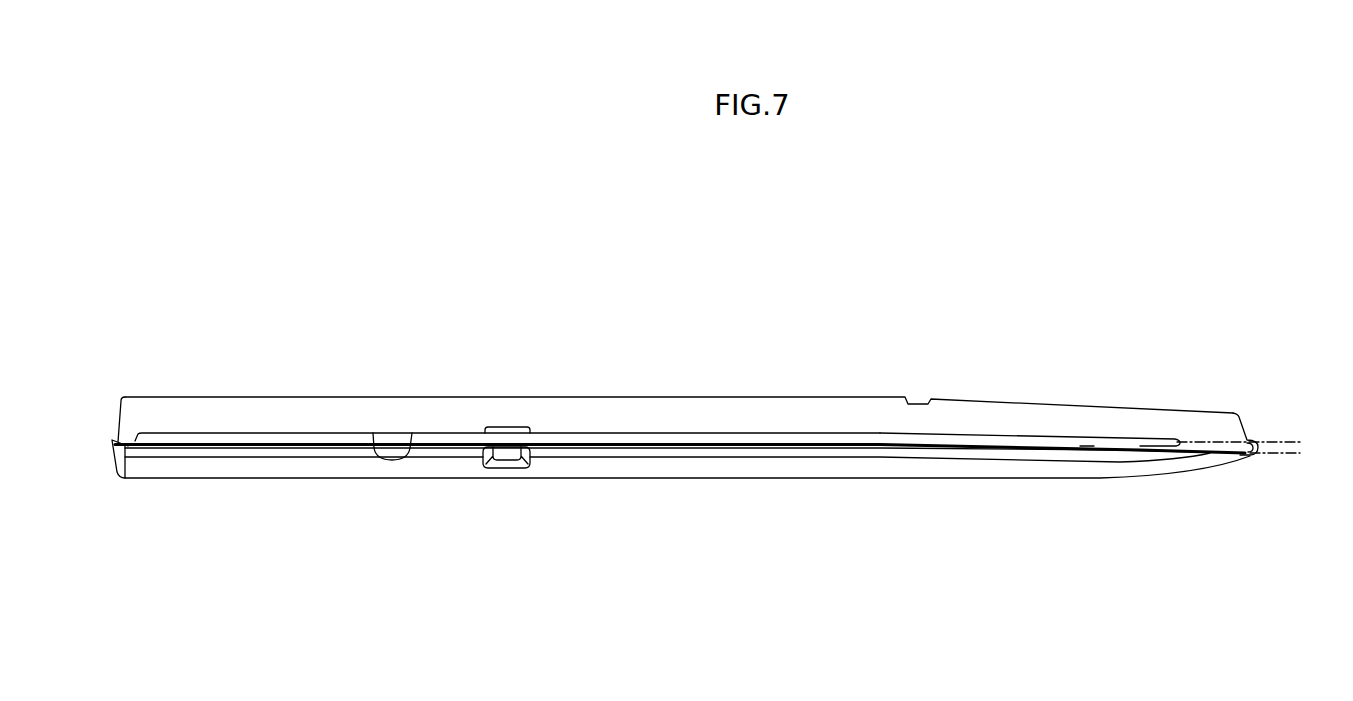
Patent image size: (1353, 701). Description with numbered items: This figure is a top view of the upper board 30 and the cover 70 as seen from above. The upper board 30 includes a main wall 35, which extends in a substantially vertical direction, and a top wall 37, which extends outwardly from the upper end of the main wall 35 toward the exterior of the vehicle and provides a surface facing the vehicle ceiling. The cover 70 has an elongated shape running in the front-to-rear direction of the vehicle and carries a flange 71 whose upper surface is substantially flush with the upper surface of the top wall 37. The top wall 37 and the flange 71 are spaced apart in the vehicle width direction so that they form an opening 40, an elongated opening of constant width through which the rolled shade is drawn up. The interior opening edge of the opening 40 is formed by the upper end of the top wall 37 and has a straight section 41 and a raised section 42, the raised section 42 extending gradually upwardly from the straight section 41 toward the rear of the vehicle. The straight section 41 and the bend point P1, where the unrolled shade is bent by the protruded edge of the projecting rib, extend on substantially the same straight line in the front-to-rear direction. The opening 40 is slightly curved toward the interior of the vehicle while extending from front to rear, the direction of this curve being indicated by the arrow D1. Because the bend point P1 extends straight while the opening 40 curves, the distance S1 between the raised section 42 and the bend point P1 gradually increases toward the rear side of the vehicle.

The upper board 30 is at (128, 498).
The main wall 35 is at (673, 463).
The top wall 37 is at (603, 452).
The opening 40 is at (412, 443).
The straight section 41 is at (293, 440).
The raised section 42 is at (1055, 445).
The cover 70 is at (157, 383).
The flange 71 is at (235, 413).
The bend point P1 is at (1087, 445).
The distance S1 is at (1286, 490).
The arrow D1 is at (1132, 455).